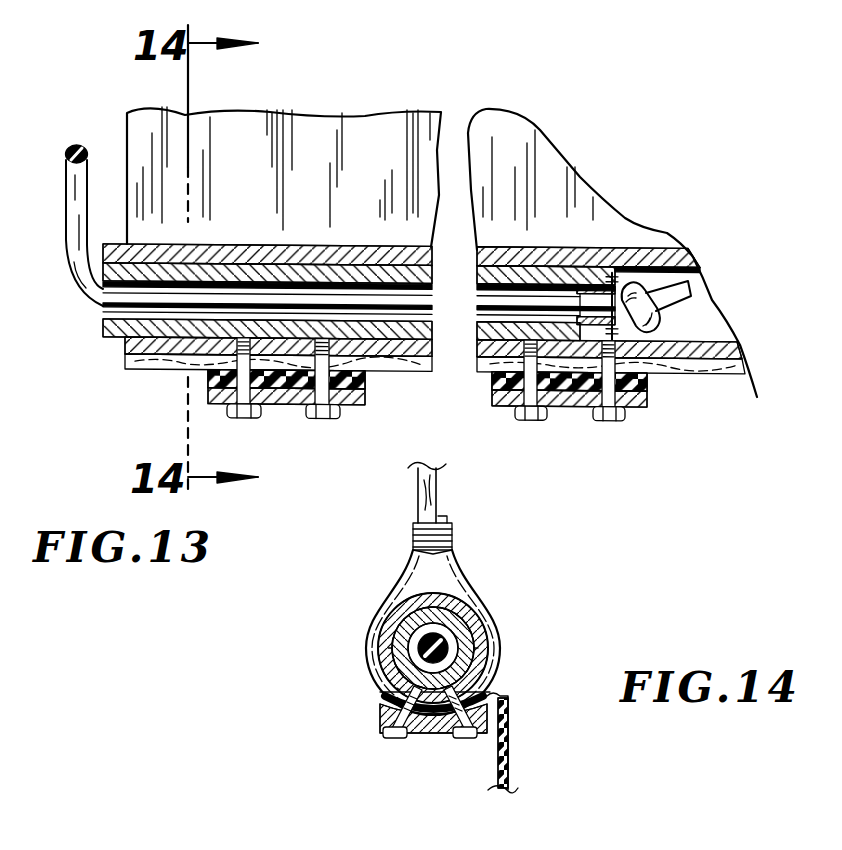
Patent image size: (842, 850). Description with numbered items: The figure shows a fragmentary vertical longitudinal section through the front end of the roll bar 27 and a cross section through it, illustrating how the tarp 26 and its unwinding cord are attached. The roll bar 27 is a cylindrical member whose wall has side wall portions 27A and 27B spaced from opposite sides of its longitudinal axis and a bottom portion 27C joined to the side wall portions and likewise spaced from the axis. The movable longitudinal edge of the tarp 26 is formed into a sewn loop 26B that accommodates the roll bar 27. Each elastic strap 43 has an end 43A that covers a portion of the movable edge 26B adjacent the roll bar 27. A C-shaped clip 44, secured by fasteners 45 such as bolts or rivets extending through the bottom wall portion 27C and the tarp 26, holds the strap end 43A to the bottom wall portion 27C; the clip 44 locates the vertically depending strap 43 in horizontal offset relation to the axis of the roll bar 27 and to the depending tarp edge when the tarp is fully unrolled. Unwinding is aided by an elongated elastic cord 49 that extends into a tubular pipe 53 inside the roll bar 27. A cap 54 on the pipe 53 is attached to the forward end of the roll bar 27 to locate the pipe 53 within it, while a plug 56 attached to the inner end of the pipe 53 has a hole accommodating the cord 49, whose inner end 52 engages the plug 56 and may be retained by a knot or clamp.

In FIG. 13, the tarp 26 is at (366, 138).
In FIG. 14, the tarp 26 is at (410, 577).
In FIG. 13, the sewn loop 26B is at (750, 386).
In FIG. 14, the sewn loop 26B is at (368, 634).
In FIG. 13, the roll bar 27 is at (618, 262).
In FIG. 14, the roll bar 27 is at (452, 600).
In FIG. 14, the side wall portion 27A is at (386, 647).
In FIG. 14, the side wall portion 27B is at (492, 641).
In FIG. 14, the bottom portion 27C is at (395, 690).
In FIG. 14, the elastic strap 43 is at (508, 747).
In FIG. 13, the strap end 43A is at (366, 378).
In FIG. 14, the strap end 43A is at (494, 693).
In FIG. 13, the C-shaped clip 44 is at (360, 404).
In FIG. 14, the C-shaped clip 44 is at (383, 716).
In FIG. 13, the fasteners 45 is at (308, 417).
In FIG. 14, the fasteners 45 is at (462, 739).
In FIG. 13, the elastic cord 49 is at (74, 234).
In FIG. 14, the elastic cord 49 is at (425, 649).
In FIG. 13, the cord end 52 is at (660, 324).
In FIG. 13, the pipe 53 is at (351, 268).
In FIG. 14, the pipe 53 is at (459, 648).
In FIG. 13, the cap 54 is at (106, 352).
In FIG. 13, the plug 56 is at (652, 280).